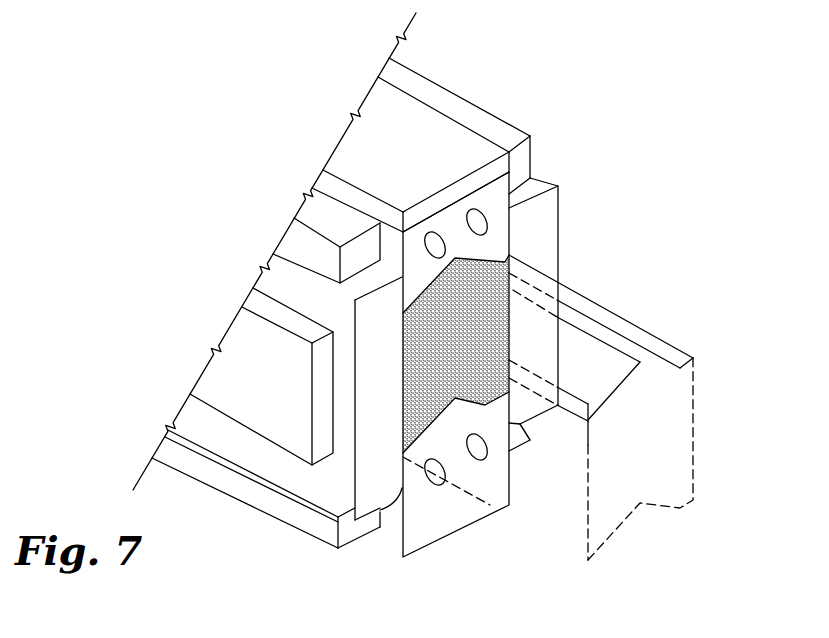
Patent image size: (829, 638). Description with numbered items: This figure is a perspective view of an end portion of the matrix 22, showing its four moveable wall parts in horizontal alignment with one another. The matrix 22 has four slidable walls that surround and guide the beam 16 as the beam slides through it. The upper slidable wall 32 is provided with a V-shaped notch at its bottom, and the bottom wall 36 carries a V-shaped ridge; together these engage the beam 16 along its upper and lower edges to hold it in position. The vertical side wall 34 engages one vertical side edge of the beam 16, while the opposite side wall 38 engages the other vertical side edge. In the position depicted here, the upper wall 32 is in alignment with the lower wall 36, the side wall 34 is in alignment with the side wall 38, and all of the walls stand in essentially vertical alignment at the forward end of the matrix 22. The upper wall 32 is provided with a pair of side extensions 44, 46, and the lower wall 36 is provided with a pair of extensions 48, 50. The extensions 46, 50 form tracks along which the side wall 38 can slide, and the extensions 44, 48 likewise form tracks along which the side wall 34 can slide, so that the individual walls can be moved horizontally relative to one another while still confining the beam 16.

The beam 16 is at (675, 408).
The matrix 22 is at (460, 81).
The upper slidable wall 32 is at (450, 150).
The vertical side wall 34 is at (550, 232).
The bottom wall 36 is at (445, 522).
The side wall 38 is at (335, 478).
The side extension 44 is at (503, 128).
The side extension 46 is at (340, 210).
The extension 48 is at (517, 440).
The extension 50 is at (352, 537).